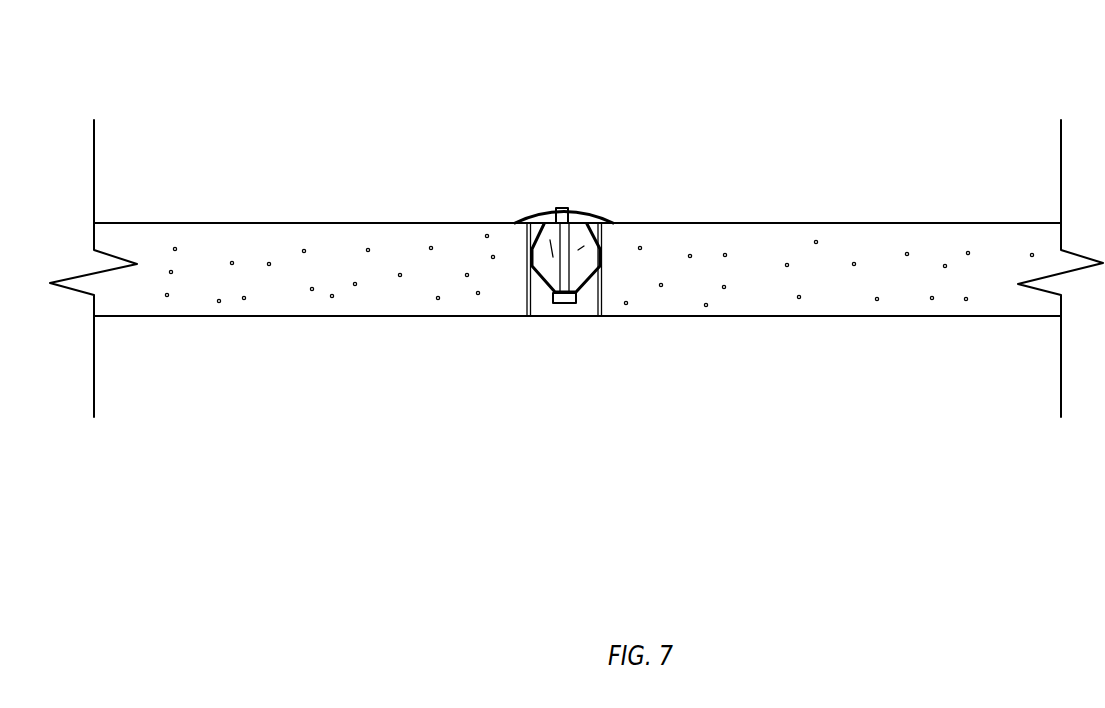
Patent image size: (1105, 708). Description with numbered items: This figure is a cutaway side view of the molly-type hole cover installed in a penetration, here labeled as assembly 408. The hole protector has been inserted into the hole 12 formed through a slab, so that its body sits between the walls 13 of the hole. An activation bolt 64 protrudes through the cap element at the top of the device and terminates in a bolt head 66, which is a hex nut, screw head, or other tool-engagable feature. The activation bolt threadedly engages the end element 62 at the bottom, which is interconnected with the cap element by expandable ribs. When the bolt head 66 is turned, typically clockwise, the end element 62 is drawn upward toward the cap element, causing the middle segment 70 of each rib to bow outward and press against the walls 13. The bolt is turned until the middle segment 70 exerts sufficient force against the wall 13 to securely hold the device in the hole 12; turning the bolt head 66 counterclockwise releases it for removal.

The hole 12 is at (588, 323).
The walls 13 is at (536, 308).
The end element 62 is at (565, 303).
The activation bolt 64 is at (600, 238).
The bolt head 66 is at (561, 208).
The middle segment 70 is at (538, 216).
The fastener assembly 408 is at (535, 259).